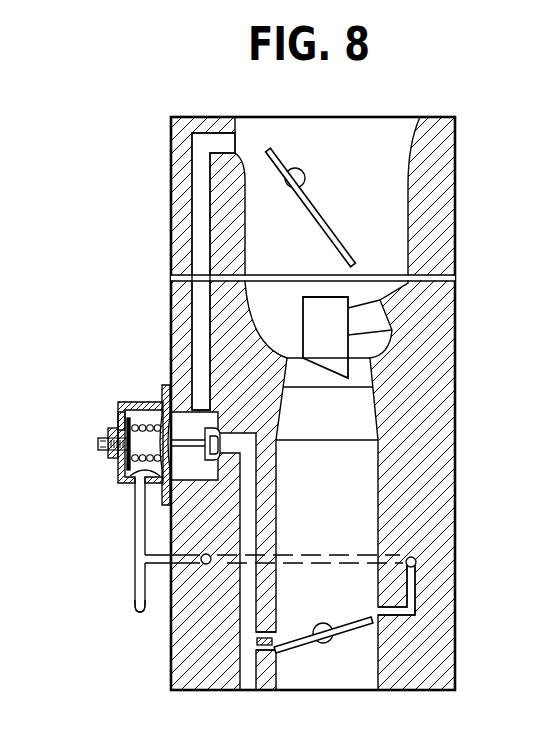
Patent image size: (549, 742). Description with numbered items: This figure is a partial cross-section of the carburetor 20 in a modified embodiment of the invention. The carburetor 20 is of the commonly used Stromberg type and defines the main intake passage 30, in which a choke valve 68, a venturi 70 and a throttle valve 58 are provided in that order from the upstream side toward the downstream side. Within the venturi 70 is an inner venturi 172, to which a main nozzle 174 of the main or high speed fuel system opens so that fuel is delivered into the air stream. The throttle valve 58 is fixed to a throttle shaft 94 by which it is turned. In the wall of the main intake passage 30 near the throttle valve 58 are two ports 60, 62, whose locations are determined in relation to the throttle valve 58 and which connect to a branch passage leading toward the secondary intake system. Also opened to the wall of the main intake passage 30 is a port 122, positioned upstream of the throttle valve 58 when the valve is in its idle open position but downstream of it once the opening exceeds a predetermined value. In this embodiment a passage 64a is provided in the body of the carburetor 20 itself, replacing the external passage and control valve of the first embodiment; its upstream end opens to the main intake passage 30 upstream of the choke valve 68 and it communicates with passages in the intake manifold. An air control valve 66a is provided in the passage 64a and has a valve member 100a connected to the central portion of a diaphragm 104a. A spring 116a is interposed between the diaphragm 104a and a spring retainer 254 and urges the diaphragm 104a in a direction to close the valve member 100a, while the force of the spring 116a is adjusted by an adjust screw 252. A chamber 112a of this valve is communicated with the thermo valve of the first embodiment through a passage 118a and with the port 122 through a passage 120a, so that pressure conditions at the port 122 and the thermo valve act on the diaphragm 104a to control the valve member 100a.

The carburetor 20 is at (160, 316).
The main intake passage 30 is at (341, 508).
The throttle valve 58 is at (318, 628).
The port 60 is at (277, 628).
The port 62 is at (273, 648).
The passage 64a is at (200, 212).
The air control valve 66a is at (112, 398).
The choke valve 68 is at (322, 202).
The venturi 70 is at (293, 373).
The throttle shaft 94 is at (327, 643).
The valve member 100a is at (195, 450).
The diaphragm 104a is at (133, 472).
The chamber 112a is at (140, 448).
The spring 116a is at (146, 423).
The passage 118a is at (133, 570).
The passage 120a is at (150, 567).
The port 122 is at (377, 608).
The inner venturi 172 is at (328, 373).
The main nozzle 174 is at (366, 300).
The adjust screw 252 is at (103, 445).
The spring retainer 254 is at (120, 422).